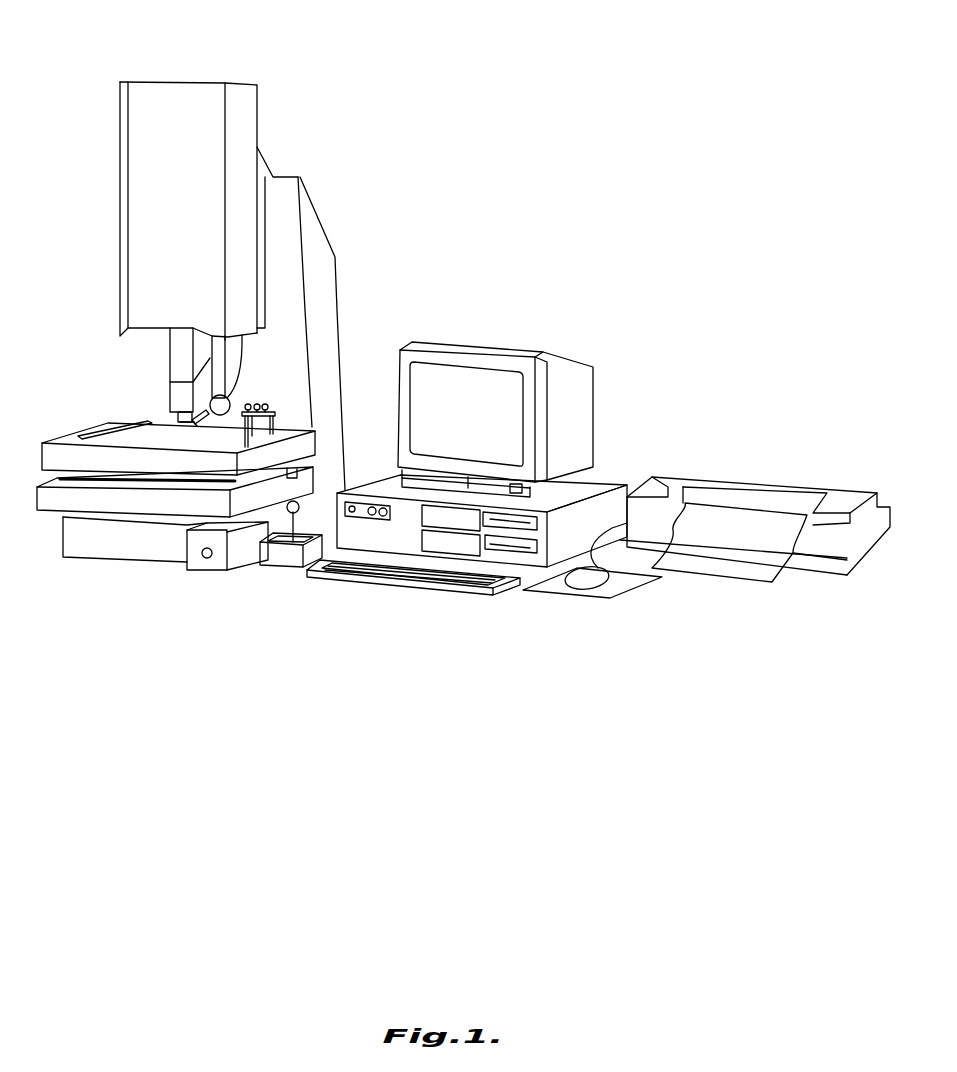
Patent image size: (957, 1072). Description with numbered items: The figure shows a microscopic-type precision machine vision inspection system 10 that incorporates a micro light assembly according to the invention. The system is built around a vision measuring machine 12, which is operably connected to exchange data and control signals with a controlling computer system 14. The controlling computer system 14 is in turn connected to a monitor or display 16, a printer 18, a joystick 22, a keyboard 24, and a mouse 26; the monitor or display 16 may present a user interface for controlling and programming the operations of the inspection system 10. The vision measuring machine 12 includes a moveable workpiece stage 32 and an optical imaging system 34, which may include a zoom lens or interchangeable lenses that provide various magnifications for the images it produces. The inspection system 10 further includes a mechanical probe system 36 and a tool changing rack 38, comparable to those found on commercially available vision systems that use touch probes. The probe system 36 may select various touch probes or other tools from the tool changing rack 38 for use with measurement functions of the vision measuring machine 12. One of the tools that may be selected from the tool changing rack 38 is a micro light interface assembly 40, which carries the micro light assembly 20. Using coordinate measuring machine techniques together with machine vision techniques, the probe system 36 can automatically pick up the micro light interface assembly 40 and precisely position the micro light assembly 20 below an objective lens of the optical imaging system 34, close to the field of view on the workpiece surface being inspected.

The machine vision inspection system 10 is at (602, 148).
The vision measuring machine 12 is at (177, 81).
The controlling computer system 14 is at (600, 470).
The monitor or display 16 is at (478, 345).
The printer 18 is at (763, 480).
The micro light assembly 20 is at (185, 428).
The joystick 22 is at (283, 572).
The keyboard 24 is at (390, 588).
The mouse 26 is at (607, 590).
The moveable workpiece stage 32 is at (93, 428).
The optical imaging system 34 is at (172, 333).
The mechanical probe system 36 is at (240, 395).
The tool changing rack 38 is at (278, 411).
The micro light interface assembly 40 is at (203, 424).